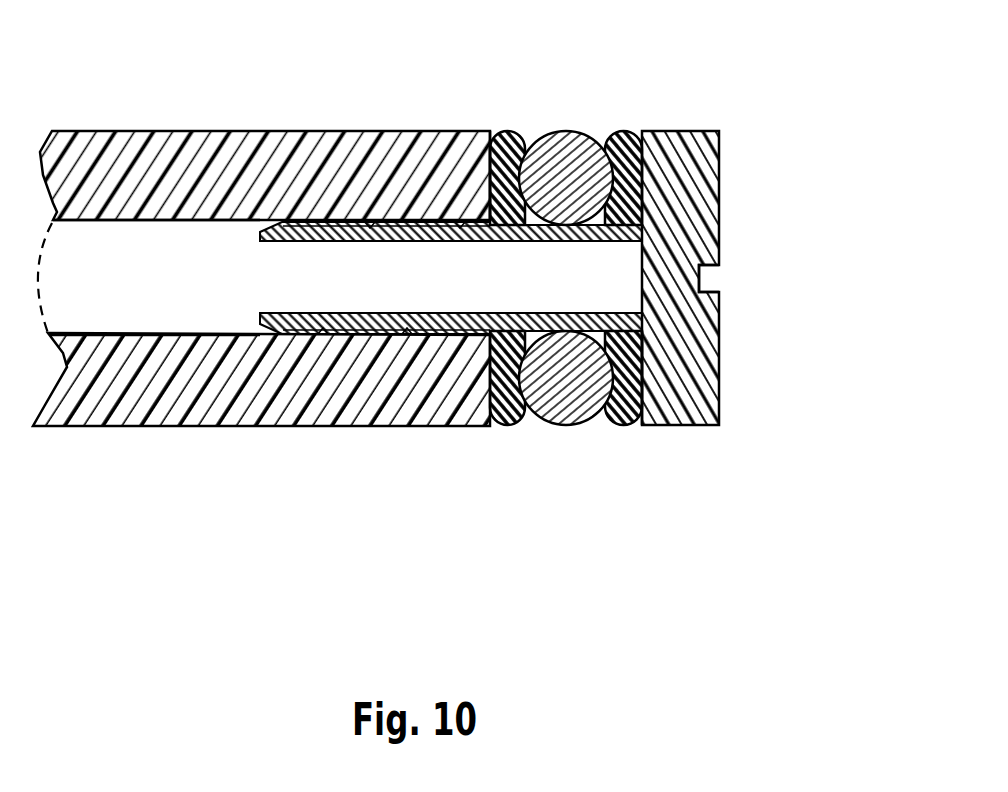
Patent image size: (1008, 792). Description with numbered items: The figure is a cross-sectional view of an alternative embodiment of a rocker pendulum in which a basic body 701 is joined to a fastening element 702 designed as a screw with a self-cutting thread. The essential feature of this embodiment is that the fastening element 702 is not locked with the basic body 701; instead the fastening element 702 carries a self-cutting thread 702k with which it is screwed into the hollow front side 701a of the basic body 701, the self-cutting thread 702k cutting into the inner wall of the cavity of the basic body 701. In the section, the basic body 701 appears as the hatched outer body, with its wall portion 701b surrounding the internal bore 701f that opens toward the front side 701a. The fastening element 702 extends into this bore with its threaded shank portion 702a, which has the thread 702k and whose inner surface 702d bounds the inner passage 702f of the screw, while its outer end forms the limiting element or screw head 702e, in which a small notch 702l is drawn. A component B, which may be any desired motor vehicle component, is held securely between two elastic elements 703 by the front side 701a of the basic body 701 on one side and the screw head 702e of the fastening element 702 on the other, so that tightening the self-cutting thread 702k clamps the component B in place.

The basic body 701 is at (261, 289).
The front side 701a is at (448, 133).
The outer wall of housing body 701b is at (145, 132).
The bore of housing body 701f is at (172, 301).
The fastening element 702 is at (712, 118).
The tubular sleeve portion of plug 702a is at (323, 232).
The inner surface of sleeve portion 702d is at (583, 243).
The limiting element or screw head 702e is at (675, 368).
The flow passage of plug 702f is at (586, 293).
The self-cutting thread 702k is at (407, 333).
The annular notch in plug flange 702l is at (708, 276).
The elastic elements 703 is at (632, 150).
The component B is at (565, 392).